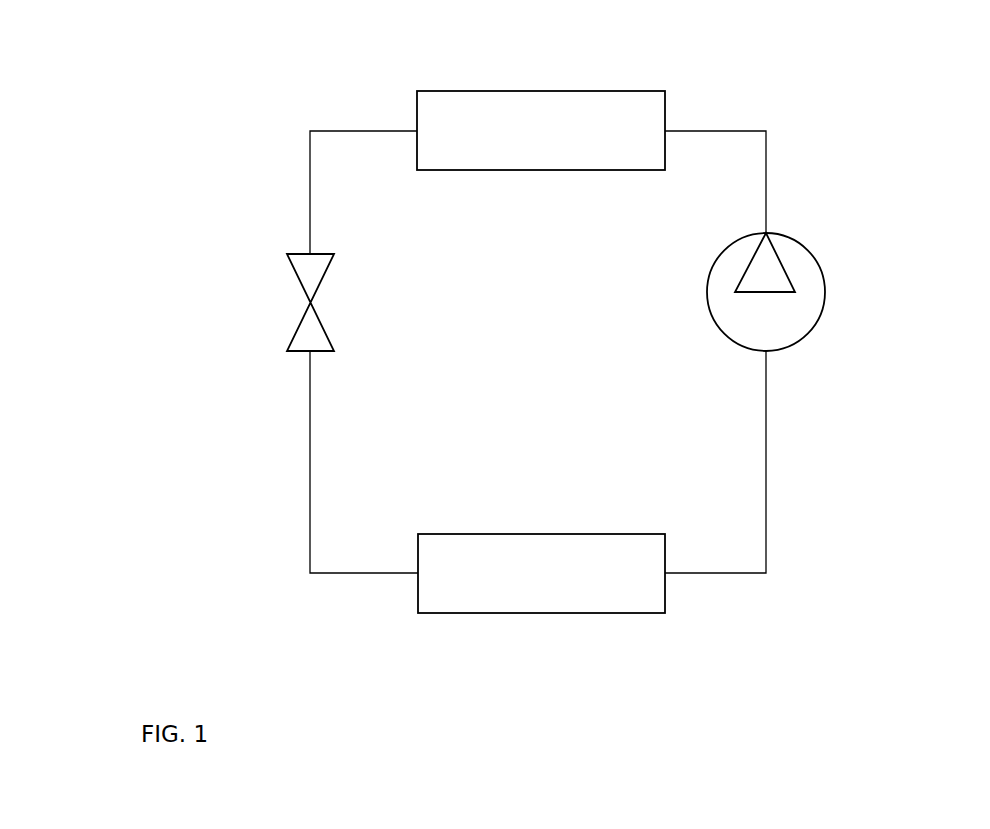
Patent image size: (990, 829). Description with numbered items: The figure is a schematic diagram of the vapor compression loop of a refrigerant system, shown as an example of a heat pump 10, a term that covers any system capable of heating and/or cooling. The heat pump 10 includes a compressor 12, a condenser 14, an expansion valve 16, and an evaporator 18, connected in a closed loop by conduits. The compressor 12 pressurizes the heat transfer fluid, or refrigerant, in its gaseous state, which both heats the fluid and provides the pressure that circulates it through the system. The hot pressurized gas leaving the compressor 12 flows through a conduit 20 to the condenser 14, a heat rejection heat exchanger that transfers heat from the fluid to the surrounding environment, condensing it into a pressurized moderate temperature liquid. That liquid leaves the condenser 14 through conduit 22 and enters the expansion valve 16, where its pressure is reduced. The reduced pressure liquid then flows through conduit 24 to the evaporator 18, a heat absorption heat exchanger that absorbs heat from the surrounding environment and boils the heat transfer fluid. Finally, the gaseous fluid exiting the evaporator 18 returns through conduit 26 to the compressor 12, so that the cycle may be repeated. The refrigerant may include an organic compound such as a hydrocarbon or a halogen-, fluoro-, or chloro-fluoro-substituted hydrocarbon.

The heat pump 10 is at (165, 159).
The compressor 12 is at (768, 309).
The condenser 14 is at (541, 130).
The expansion valve 16 is at (295, 328).
The evaporator 18 is at (541, 573).
The conduit 20 is at (766, 167).
The conduit 22 is at (347, 135).
The conduit 24 is at (309, 472).
The conduit 26 is at (765, 424).